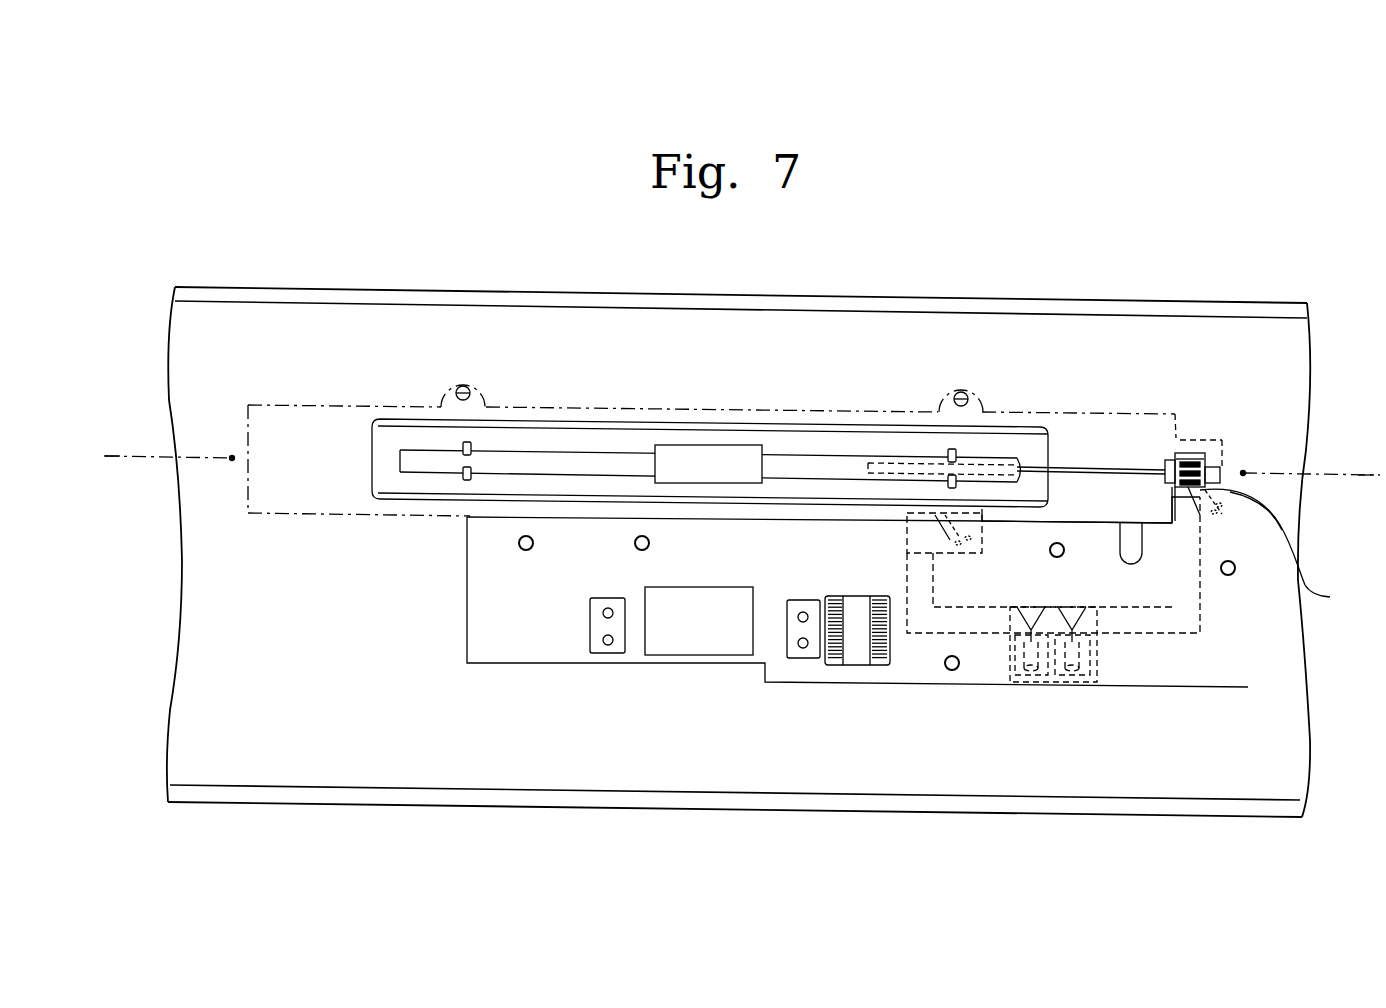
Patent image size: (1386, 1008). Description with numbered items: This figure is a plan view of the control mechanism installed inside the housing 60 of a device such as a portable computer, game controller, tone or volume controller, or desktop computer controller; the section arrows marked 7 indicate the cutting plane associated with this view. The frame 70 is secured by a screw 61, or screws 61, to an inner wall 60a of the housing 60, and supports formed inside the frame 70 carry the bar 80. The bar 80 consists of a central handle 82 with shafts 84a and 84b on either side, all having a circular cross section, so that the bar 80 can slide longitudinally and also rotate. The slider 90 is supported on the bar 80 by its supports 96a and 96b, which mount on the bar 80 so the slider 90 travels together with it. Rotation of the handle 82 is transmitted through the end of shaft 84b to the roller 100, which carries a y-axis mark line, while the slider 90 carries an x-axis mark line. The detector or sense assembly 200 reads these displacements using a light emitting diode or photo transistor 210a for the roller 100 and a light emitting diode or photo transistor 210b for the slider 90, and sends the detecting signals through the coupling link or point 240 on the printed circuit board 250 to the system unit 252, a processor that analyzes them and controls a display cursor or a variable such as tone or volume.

The housing 60 is at (156, 404).
The inner wall 60a is at (190, 372).
The frame 70 is at (260, 401).
The screw 61 is at (464, 386).
The slider 90 is at (365, 434).
The bar 80 is at (551, 444).
The shaft 84a is at (596, 460).
The shaft 84b is at (799, 460).
The handle 82 is at (701, 460).
The support 96a is at (466, 481).
The support 96b is at (955, 447).
The roller 100 is at (1210, 450).
The printed circuit board 250 is at (518, 650).
The system unit 252 is at (698, 657).
The detector or sense assembly 200 is at (982, 635).
The light emitting diode or photo transistor 210b is at (932, 525).
The light emitting diode or photo transistor 210a is at (1305, 590).
The coupling link or point 240 is at (1053, 610).
The section line 7- 7 is at (112, 469).